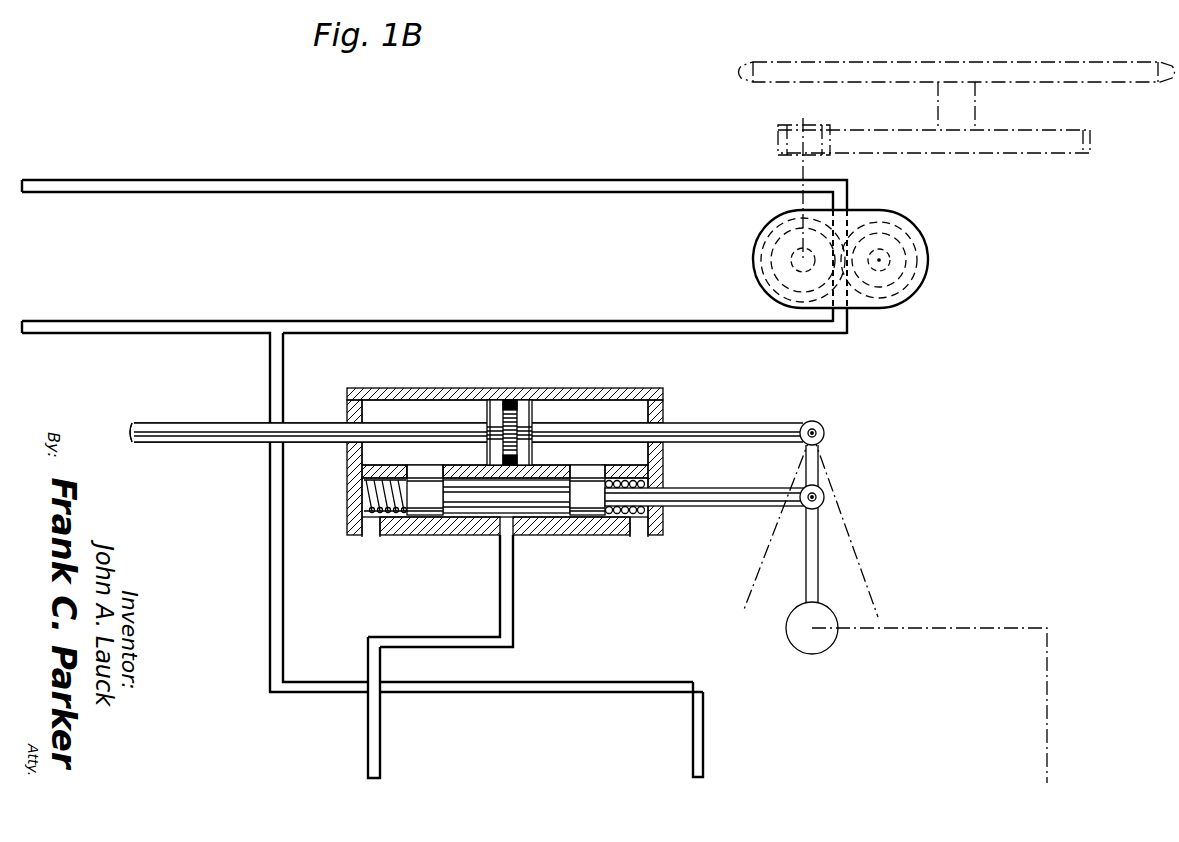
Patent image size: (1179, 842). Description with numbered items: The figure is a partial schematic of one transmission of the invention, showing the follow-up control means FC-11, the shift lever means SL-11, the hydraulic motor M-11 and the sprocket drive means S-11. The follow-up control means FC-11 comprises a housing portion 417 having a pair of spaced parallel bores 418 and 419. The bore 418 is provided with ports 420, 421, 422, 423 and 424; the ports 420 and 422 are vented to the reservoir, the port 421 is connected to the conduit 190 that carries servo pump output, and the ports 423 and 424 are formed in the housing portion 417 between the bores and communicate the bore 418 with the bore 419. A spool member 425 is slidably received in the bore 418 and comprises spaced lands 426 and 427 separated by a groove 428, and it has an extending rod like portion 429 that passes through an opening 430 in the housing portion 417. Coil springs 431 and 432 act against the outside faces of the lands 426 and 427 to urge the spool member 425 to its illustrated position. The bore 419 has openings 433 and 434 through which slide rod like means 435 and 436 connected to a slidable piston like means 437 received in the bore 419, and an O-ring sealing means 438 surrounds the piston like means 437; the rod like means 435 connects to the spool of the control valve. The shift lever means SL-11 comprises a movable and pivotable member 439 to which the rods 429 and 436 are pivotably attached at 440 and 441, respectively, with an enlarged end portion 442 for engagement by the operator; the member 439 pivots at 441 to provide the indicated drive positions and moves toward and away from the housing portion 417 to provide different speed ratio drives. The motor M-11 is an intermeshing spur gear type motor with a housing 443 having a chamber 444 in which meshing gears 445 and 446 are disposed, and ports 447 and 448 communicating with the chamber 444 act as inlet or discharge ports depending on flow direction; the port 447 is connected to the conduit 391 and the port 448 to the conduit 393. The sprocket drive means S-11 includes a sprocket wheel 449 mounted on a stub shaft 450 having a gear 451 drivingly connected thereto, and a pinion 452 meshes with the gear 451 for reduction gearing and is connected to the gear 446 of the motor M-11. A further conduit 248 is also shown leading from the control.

The conduit 393 is at (56, 180).
The conduit 391 is at (56, 320).
The conduit 190 is at (381, 755).
The conduit 248 is at (705, 762).
The housing portion 417 is at (350, 470).
The bore 418 is at (483, 518).
The bore 419 is at (413, 400).
The port 420 is at (372, 527).
The port 421 is at (512, 520).
The port 422 is at (645, 528).
The port 423 is at (590, 470).
The port 424 is at (425, 470).
The spool member 425 is at (462, 514).
The land 426 is at (415, 487).
The land 427 is at (578, 487).
The groove 428 is at (546, 522).
The rod like portion 429 is at (747, 488).
The opening 430 is at (655, 490).
The coil spring 431 is at (362, 512).
The coil spring 432 is at (657, 512).
The opening 433 is at (352, 424).
The opening 434 is at (662, 424).
The rod like means 435 is at (200, 423).
The rod like means 436 is at (757, 427).
The piston like means 437 is at (534, 410).
The O-ring sealing means 438 is at (510, 400).
The movable and pivotable member 439 is at (806, 592).
The pivot 440 is at (822, 490).
The pivot 441 is at (820, 425).
The enlarged end portion 442 is at (830, 640).
The housing 443 is at (875, 308).
The chamber 444 is at (905, 236).
The gear 445 is at (892, 215).
The gear 446 is at (765, 240).
The port 447 is at (848, 316).
The port 448 is at (846, 205).
The sprocket wheel 449 is at (1026, 63).
The stub shaft 450 is at (966, 100).
The gear 451 is at (1070, 130).
The pinion 452 is at (777, 134).
The hydraulic motor M-11 is at (944, 262).
The sprocket drive means S-11 is at (1046, 168).
The shift lever means SL-11 is at (902, 482).
The follow-up control means FC-11 is at (608, 557).